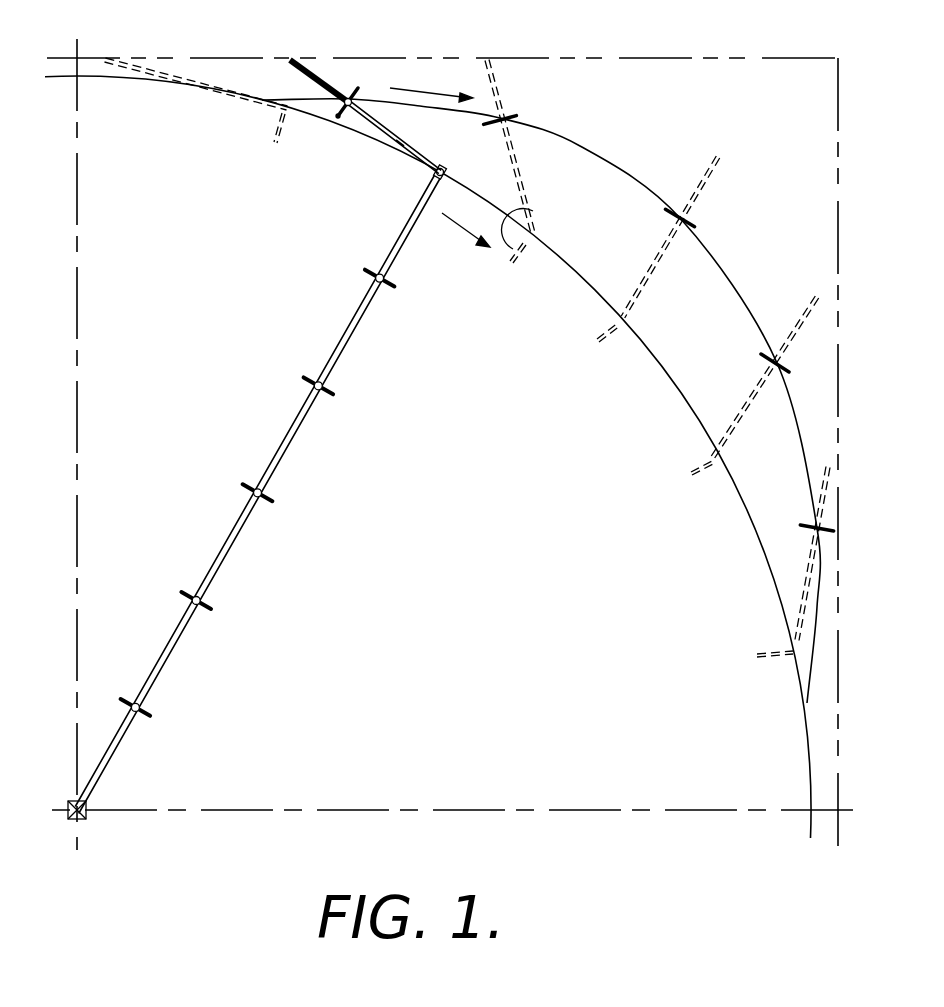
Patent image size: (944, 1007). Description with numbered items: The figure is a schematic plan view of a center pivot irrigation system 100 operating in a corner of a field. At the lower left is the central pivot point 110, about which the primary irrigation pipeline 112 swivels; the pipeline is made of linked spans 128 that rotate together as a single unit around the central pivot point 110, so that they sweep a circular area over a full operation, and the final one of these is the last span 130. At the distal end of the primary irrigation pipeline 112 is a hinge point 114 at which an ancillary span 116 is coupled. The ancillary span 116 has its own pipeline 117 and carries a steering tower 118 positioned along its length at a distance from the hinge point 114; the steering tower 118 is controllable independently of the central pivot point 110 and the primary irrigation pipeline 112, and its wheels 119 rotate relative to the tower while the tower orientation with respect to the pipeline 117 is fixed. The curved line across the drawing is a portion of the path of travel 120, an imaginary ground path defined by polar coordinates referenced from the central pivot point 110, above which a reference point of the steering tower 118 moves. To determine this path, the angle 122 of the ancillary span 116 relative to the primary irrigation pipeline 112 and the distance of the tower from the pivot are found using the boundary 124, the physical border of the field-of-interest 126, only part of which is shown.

The irrigation system 100 is at (180, 670).
The central pivot point 110 is at (70, 819).
The primary irrigation pipeline 112 is at (209, 580).
The hinge point 114 is at (442, 169).
The ancillary span 116 is at (388, 128).
The pipeline of the ancillary span 117 is at (403, 144).
The steering tower 118 is at (351, 87).
The wheels 119 is at (338, 118).
The path of travel 120 is at (600, 158).
The angle 122 is at (513, 249).
The boundary 124 is at (672, 57).
The field-of-interest 126 is at (457, 651).
The spans 128 is at (120, 698).
The last span 130 is at (403, 250).